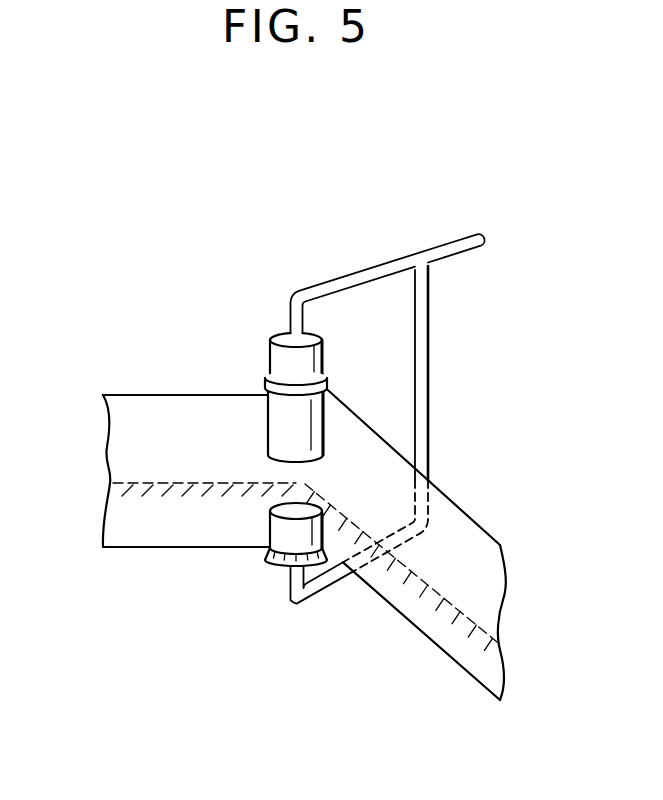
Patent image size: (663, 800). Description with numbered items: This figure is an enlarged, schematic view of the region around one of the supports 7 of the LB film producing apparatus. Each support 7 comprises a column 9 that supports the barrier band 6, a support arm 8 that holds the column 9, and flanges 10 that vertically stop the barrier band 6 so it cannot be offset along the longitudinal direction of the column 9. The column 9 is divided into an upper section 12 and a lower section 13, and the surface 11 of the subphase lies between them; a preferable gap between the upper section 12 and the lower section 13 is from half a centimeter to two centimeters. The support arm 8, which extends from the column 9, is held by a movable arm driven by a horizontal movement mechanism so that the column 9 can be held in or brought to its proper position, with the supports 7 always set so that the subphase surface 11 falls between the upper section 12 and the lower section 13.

The barrier band 6 is at (192, 410).
The support 7 is at (328, 271).
The support arm 8 is at (466, 250).
The column 9 is at (270, 362).
The flange 10 is at (328, 388).
The surface of the subphase 11 is at (84, 479).
The upper section 12 is at (325, 366).
The lower section 13 is at (277, 528).